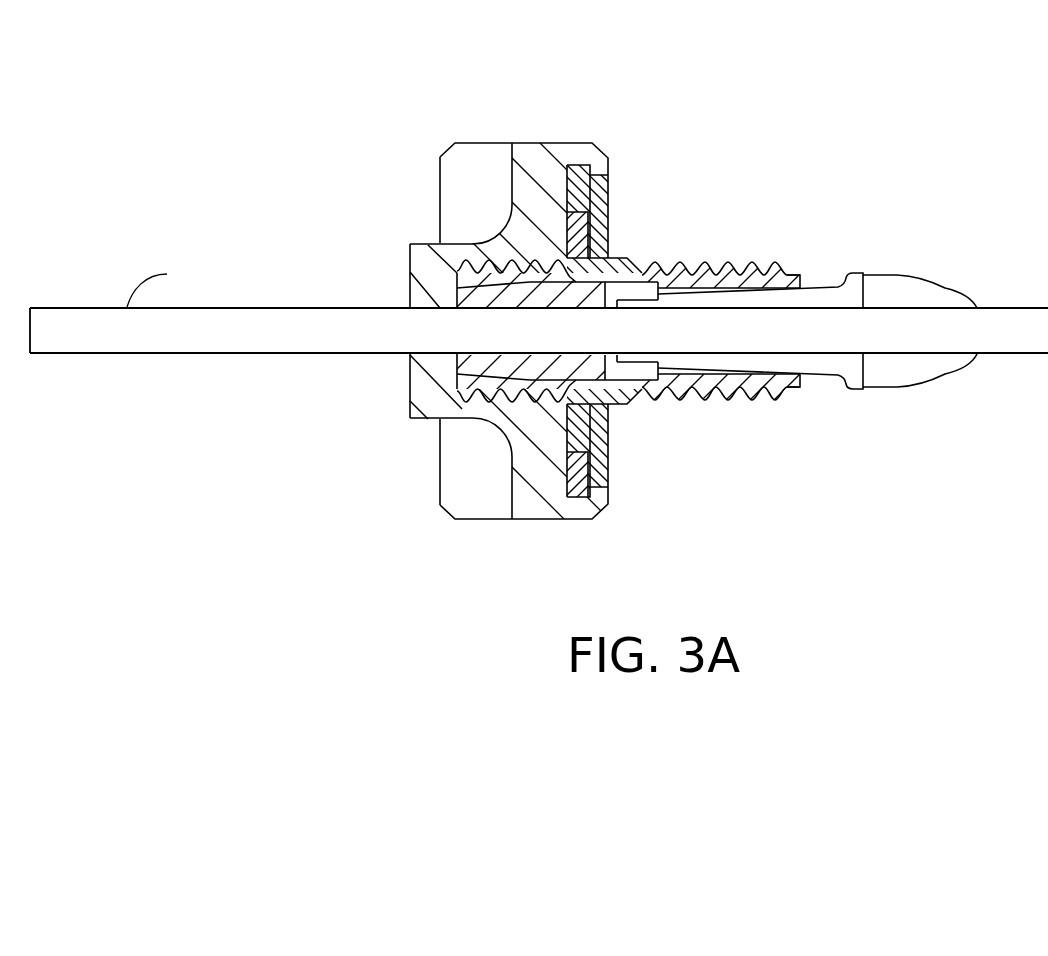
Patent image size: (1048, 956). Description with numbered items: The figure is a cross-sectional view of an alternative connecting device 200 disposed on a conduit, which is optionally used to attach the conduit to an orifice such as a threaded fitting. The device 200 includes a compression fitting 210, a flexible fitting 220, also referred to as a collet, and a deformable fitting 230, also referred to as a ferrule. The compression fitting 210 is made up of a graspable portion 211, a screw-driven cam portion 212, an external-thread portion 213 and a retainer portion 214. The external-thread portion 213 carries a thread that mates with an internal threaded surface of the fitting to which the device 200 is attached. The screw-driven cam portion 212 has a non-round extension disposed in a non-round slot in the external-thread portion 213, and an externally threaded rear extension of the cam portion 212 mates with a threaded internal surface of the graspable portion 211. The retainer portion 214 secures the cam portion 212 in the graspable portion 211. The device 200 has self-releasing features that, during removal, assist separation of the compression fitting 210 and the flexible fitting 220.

The connecting device 200 is at (539, 339).
The compression fitting 210 is at (551, 352).
The graspable portion 211 is at (477, 143).
The screw-driven cam portion 212 is at (470, 419).
The external-thread portion 213 is at (755, 257).
The retainer portion 214 is at (608, 183).
The flexible fitting 220 is at (848, 390).
The deformable fitting 230 is at (944, 289).